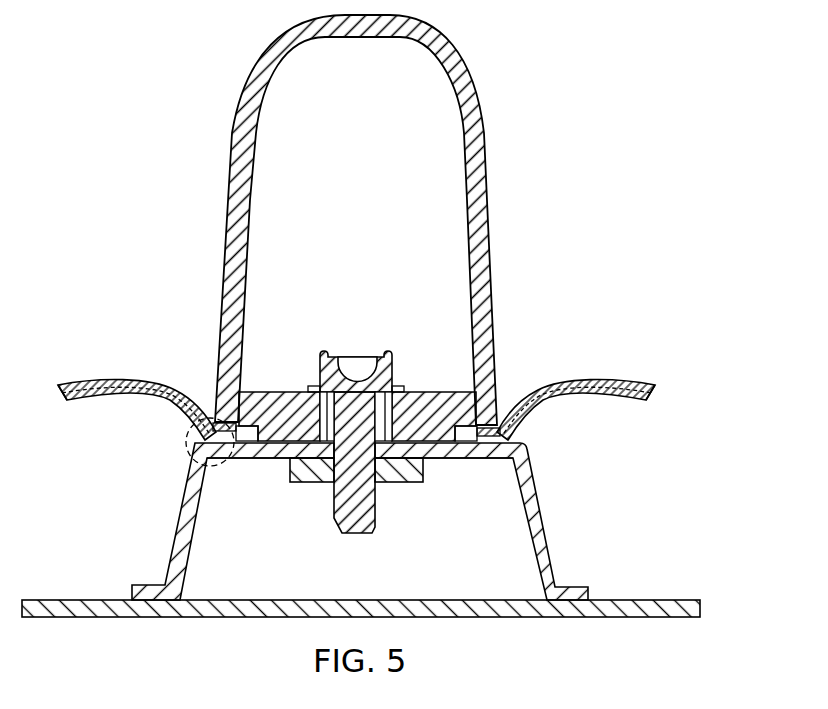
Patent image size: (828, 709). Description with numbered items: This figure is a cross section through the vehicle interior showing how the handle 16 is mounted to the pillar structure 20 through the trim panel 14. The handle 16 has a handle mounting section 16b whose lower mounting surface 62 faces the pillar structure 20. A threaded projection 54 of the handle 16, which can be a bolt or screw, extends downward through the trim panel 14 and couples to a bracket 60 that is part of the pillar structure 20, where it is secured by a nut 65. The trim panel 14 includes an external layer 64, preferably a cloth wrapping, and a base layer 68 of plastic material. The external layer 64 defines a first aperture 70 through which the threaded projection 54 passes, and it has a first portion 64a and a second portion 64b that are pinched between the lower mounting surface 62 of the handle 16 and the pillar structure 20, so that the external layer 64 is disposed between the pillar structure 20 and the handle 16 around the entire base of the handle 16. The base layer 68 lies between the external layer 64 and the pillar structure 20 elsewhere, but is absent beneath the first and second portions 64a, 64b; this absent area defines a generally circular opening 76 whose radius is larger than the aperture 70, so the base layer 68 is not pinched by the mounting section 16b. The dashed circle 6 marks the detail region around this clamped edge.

The detail region of FIG. 6 is at (186, 447).
The trim panel 14 is at (112, 386).
The handle 16 is at (490, 243).
The handle mounting section 16b is at (497, 378).
The pillar structure 20 is at (227, 617).
The threaded projections 54 is at (335, 518).
The brackets 60 is at (542, 510).
The lower mounting surface 62 is at (435, 445).
The external layer 64 is at (150, 388).
The first portion of the external layer 64a is at (262, 393).
The second portion of the external layer 64b is at (465, 425).
The nut 65 is at (405, 483).
The base layer 68 is at (88, 398).
The first aperture 70 is at (472, 441).
The circular opening 76 is at (230, 445).